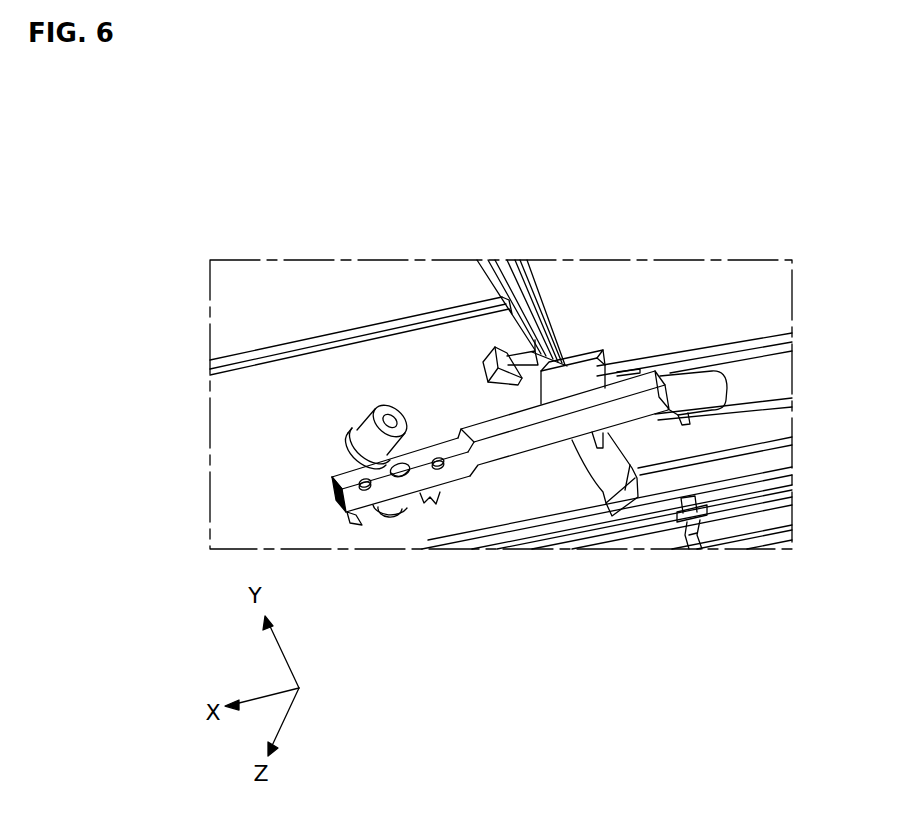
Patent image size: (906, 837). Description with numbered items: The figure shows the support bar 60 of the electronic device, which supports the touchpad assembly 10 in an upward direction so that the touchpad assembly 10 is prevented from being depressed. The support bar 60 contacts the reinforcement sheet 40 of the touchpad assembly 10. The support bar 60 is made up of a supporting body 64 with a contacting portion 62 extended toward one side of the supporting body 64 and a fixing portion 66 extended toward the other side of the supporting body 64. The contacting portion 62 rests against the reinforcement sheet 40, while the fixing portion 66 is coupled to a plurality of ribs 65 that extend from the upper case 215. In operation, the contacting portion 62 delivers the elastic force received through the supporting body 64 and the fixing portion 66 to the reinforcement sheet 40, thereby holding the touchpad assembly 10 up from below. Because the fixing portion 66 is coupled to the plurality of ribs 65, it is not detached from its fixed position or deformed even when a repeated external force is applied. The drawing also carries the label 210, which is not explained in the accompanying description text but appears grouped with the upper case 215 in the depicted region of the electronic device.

The touchpad assembly 10 is at (552, 178).
The reinforcement sheet 40 is at (583, 372).
The guide rail 210 is at (312, 163).
The upper case 215 is at (277, 280).
The support bar 60 is at (326, 463).
The contacting portion 62 is at (695, 390).
The supporting body 64 is at (523, 428).
The ribs 65 is at (428, 503).
The fixing portion 66 is at (377, 490).